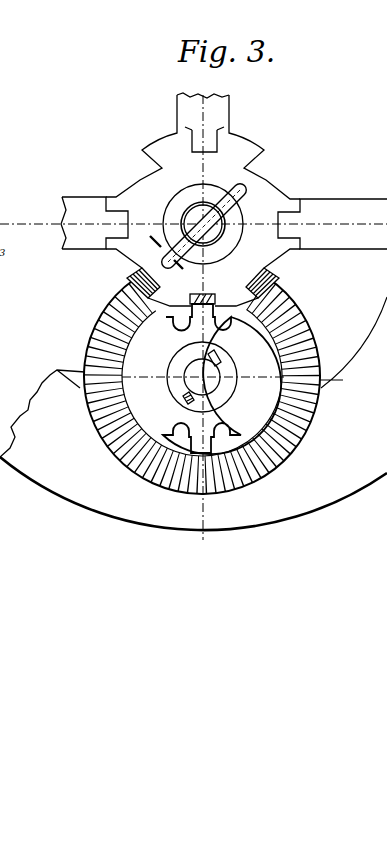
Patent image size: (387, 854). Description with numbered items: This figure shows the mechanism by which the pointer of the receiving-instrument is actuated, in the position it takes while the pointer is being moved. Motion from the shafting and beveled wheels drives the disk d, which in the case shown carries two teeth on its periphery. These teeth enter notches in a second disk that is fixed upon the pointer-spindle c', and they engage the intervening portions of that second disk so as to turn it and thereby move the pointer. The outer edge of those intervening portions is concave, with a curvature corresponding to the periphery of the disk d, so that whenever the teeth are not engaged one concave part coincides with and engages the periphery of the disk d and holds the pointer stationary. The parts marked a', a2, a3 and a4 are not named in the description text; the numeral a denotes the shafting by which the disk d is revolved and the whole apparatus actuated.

The toothed rim of wheel a' is at (194, 394).
The disk d is at (242, 360).
The ratchet notches of gear a2 is at (137, 197).
The arms with slots a3 is at (121, 218).
The pawl teeth a4 is at (125, 259).
The pointer-spindle c' is at (202, 226).